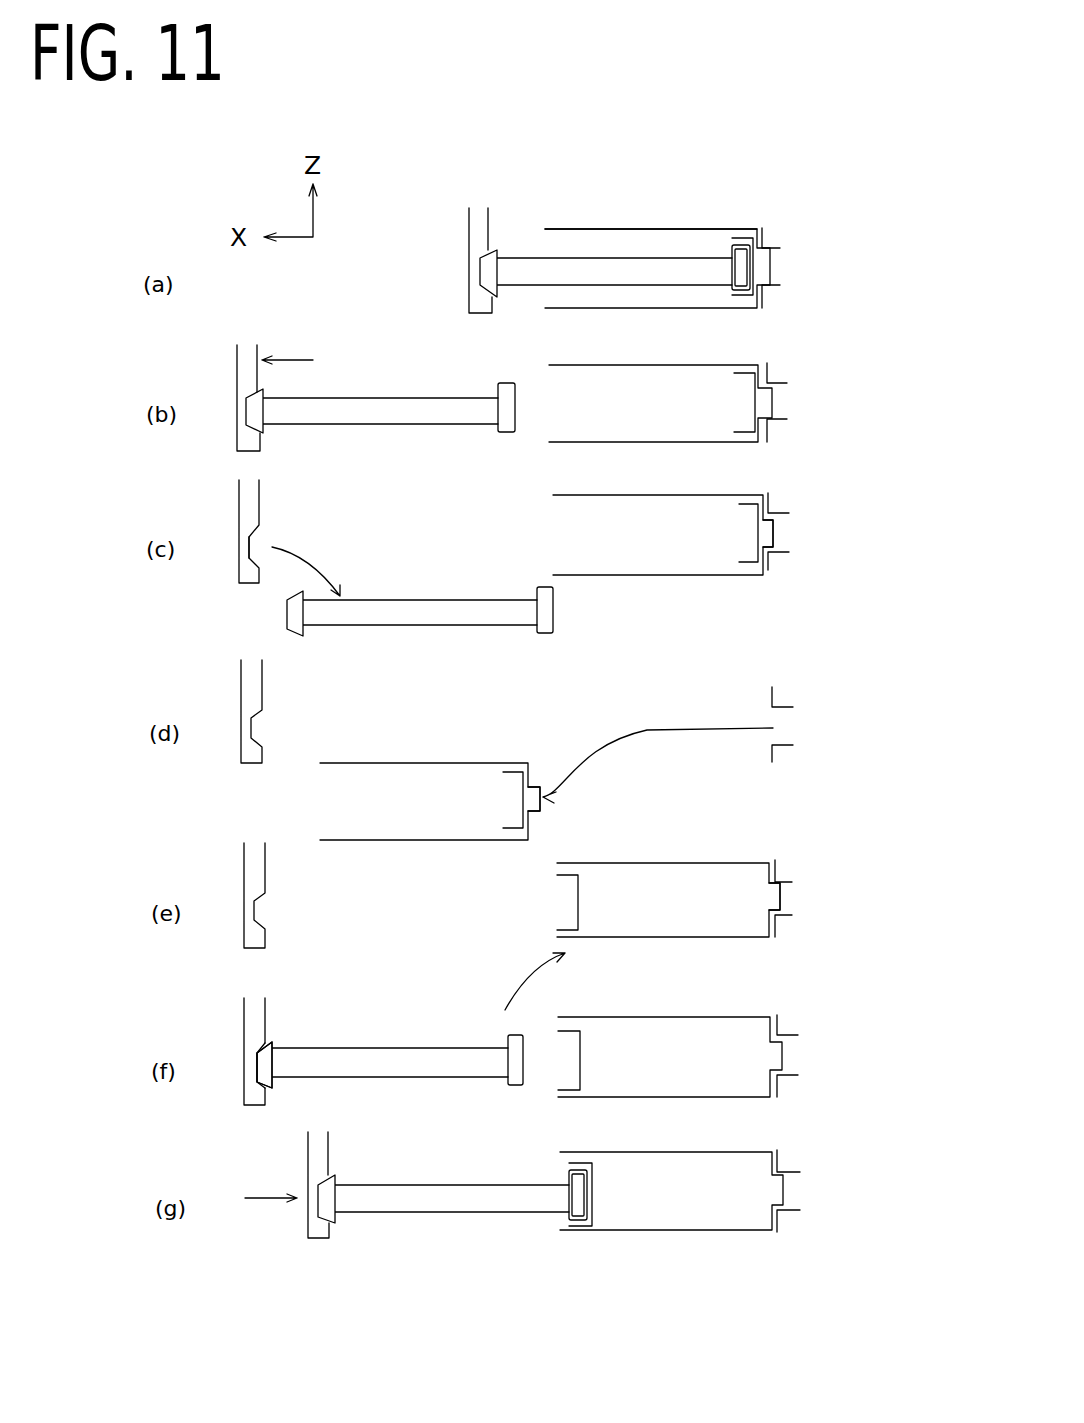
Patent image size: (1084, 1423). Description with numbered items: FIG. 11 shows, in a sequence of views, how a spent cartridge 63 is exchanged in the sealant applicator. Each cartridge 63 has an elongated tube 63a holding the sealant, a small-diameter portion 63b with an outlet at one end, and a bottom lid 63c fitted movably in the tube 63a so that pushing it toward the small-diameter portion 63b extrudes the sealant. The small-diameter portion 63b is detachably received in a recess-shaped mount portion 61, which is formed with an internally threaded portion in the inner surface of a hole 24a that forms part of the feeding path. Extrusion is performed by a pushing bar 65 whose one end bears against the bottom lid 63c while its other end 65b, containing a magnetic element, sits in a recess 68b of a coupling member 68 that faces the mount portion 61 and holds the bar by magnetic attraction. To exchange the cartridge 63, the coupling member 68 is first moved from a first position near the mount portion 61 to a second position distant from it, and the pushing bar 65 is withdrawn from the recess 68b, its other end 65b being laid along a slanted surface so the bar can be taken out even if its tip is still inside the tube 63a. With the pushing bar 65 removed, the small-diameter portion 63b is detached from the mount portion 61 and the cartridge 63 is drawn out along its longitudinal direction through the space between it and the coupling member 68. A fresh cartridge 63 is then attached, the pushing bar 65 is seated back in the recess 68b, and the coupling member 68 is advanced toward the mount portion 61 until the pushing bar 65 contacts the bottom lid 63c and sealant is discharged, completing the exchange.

The coupling member 68 is at (470, 228).
The recess 68b is at (270, 537).
The pushing bar 65 is at (523, 258).
The other end of pushing bar 65b is at (267, 1070).
The cartridge 63 is at (575, 218).
The tube 63a is at (613, 230).
The small-diameter portion 63b is at (775, 535).
The bottom lid 63c is at (743, 240).
The hole 24a is at (780, 250).
The mount portion 61 is at (778, 286).